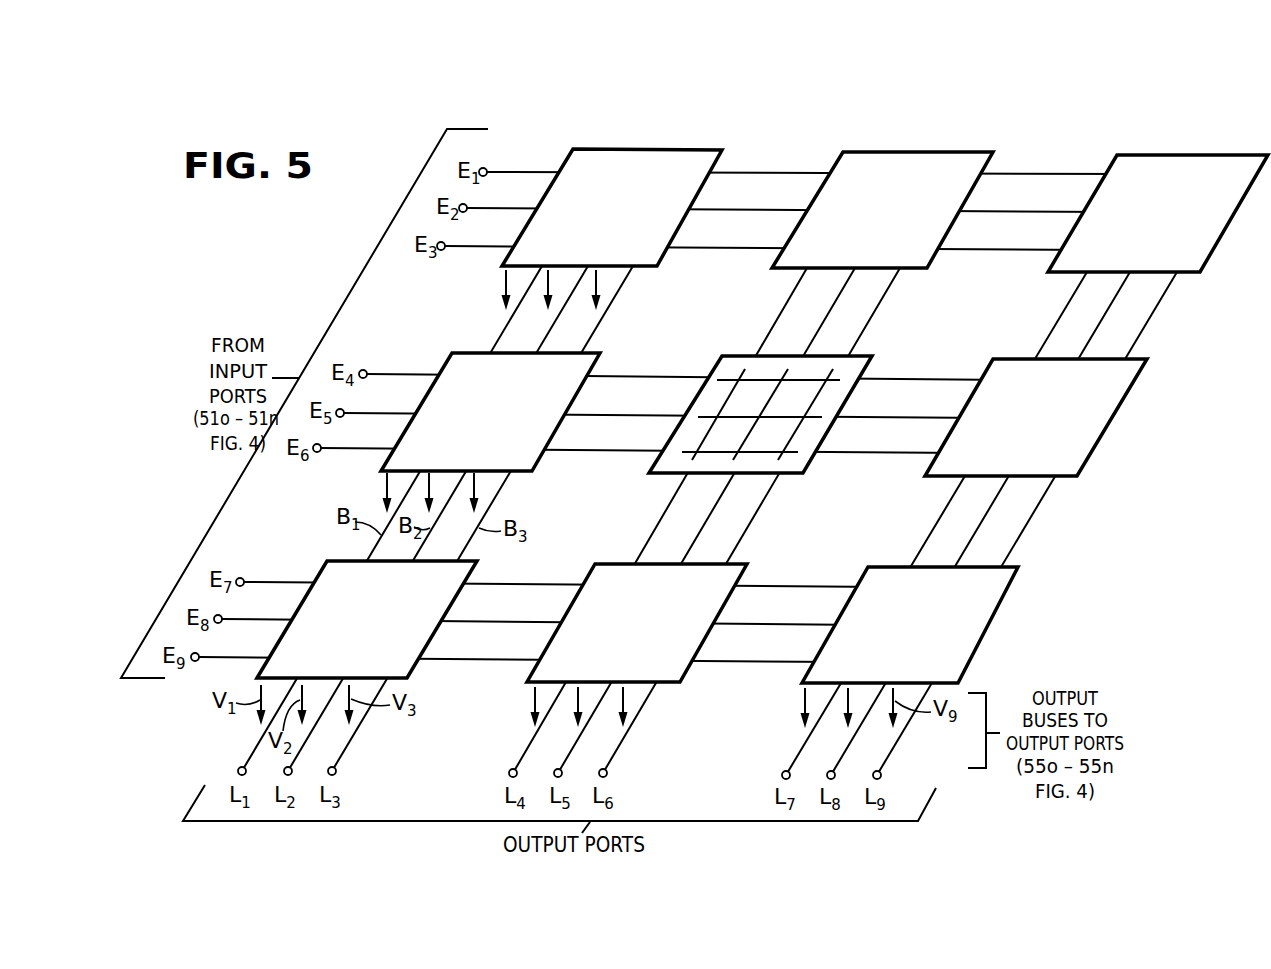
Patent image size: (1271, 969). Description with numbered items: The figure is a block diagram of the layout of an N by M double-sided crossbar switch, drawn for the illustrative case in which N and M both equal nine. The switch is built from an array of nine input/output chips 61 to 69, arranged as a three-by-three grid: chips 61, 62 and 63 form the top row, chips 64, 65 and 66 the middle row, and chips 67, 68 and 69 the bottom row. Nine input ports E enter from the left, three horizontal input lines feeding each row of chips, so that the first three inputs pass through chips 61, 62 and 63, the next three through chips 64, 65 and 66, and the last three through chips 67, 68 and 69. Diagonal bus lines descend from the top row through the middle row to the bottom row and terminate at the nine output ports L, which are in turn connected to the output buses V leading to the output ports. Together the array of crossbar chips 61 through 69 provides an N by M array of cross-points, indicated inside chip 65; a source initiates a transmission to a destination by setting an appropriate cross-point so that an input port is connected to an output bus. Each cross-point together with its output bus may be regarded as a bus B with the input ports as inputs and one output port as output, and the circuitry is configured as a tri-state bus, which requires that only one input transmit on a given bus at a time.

The switching chip 61 is at (575, 148).
The switching chip 62 is at (844, 151).
The switching chip 63 is at (1118, 154).
The switching chip 64 is at (453, 352).
The switching chip 65 is at (723, 355).
The switching chip 66 is at (1005, 358).
The switching chip 67 is at (329, 559).
The switching chip 68 is at (605, 563).
The switching chip 69 is at (880, 566).